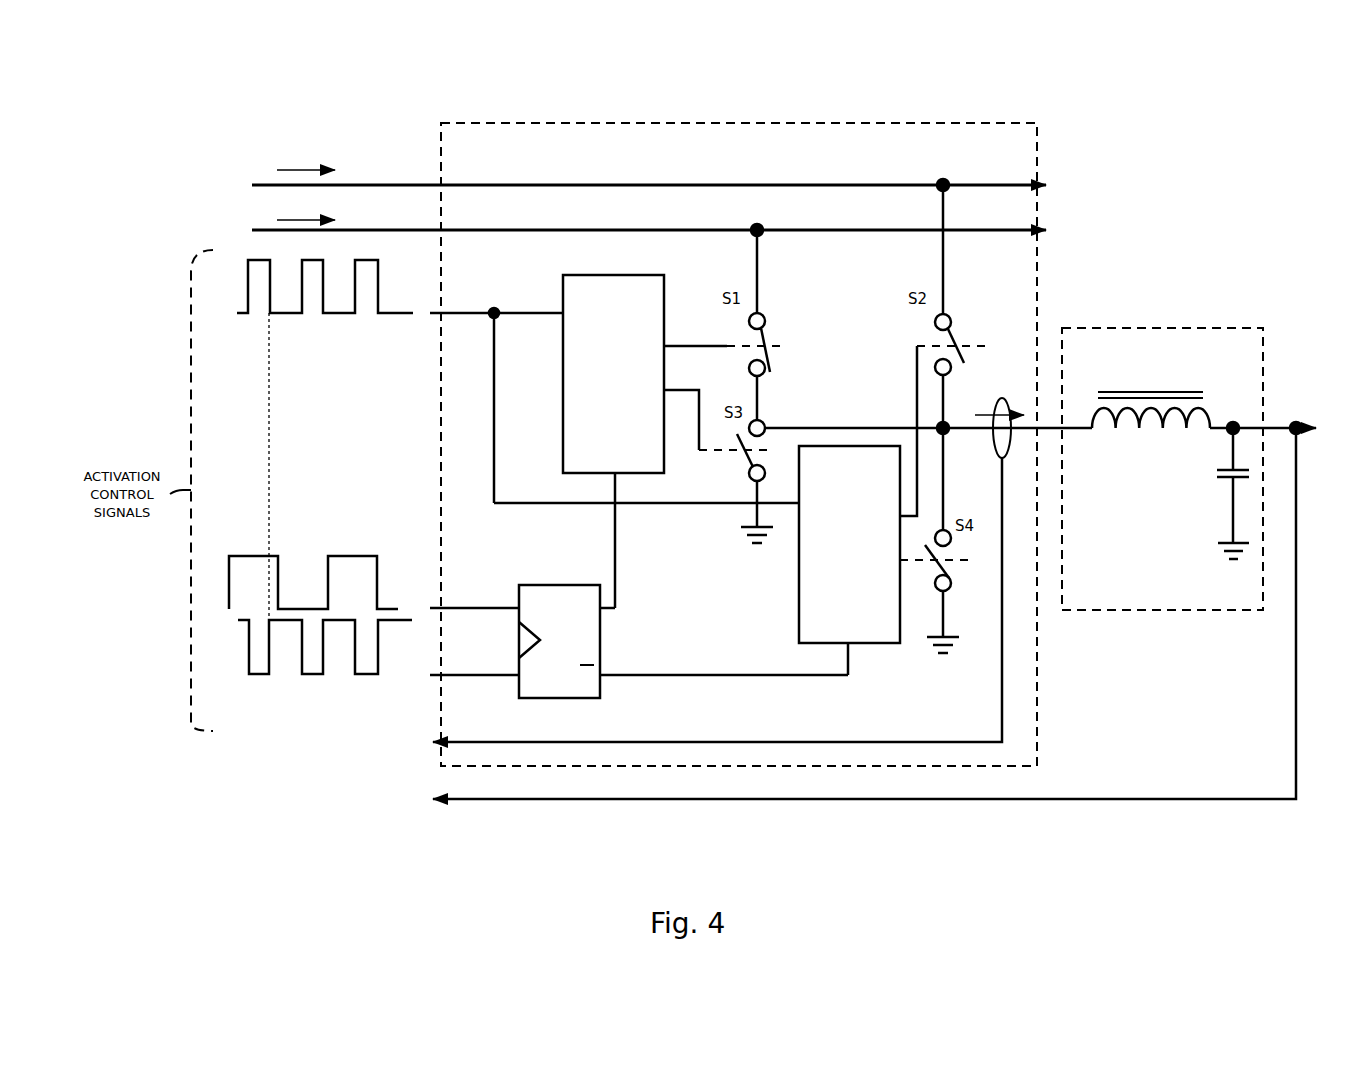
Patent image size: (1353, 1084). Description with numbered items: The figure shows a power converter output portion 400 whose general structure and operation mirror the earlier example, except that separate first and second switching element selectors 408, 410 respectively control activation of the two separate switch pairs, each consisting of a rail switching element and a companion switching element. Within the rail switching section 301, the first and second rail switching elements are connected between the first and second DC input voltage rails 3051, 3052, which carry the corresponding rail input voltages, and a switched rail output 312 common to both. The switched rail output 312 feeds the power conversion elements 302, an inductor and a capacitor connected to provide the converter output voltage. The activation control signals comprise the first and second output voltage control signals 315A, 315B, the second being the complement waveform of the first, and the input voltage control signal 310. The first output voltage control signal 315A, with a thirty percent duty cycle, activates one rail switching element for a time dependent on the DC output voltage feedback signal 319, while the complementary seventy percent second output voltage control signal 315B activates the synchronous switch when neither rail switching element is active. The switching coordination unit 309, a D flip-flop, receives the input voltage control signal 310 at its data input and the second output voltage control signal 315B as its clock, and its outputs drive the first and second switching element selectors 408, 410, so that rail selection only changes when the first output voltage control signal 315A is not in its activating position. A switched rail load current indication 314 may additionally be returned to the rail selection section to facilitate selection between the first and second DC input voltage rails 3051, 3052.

The rail switching section 301 is at (739, 412).
The power conversion elements 302 is at (1189, 434).
The first DC input voltage rail 3051 is at (649, 197).
The second DC input voltage rail 3052 is at (649, 153).
The switching coordination unit 309 is at (594, 631).
The input voltage control signal 310 is at (325, 545).
The switched rail output 312 is at (940, 443).
The switched rail load current indication 314 is at (717, 600).
The first output voltage control signal 315A is at (328, 316).
The second output voltage control signal 315B is at (334, 684).
The DC output voltage feedback signal 319 is at (864, 651).
The power converter output portion 400 is at (1277, 122).
The first switching element selector 408 is at (652, 358).
The second switching element selector 410 is at (849, 511).